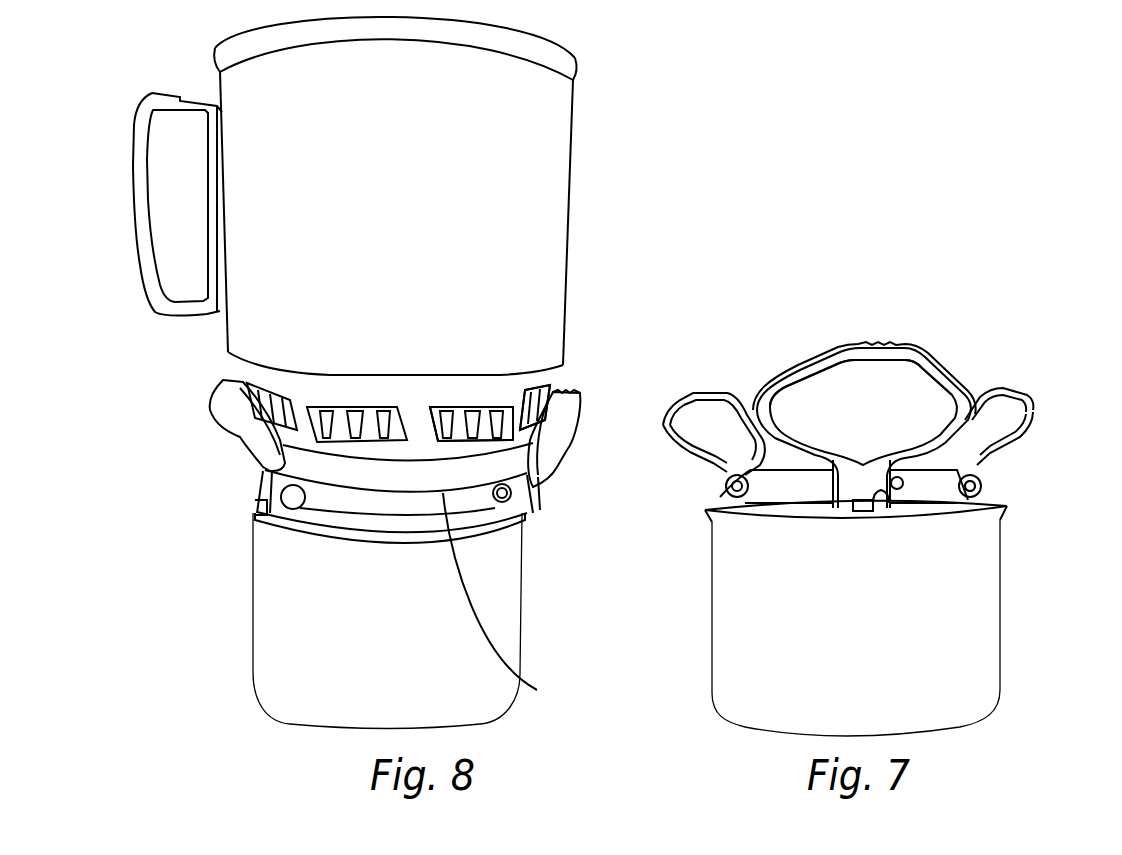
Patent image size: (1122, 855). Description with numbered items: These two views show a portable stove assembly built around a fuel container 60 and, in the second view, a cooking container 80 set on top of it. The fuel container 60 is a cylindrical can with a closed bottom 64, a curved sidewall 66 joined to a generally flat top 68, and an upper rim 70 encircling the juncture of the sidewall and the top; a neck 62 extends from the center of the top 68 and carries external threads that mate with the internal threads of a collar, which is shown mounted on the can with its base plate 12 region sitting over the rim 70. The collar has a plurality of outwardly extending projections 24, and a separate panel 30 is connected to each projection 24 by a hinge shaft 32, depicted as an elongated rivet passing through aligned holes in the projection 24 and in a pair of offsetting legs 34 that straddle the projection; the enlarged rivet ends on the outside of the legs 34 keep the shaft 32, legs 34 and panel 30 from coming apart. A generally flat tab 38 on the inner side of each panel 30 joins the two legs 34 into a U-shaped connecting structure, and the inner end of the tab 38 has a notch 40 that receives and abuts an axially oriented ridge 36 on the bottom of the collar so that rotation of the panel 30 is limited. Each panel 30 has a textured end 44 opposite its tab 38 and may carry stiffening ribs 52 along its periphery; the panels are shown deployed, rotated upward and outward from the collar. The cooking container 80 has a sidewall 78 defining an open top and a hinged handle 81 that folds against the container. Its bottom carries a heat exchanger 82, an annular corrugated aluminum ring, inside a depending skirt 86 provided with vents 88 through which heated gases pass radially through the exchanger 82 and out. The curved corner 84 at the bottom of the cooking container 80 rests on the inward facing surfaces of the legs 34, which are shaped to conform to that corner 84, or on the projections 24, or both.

In FIG. 8, the base plate 12 is at (362, 505).
In FIG. 7, the base plate 12 is at (783, 495).
In FIG. 8, the projections 24 is at (315, 500).
In FIG. 7, the projections 24 is at (757, 493).
In FIG. 8, the panel 30 is at (230, 428).
In FIG. 7, the panel 30 is at (937, 366).
In FIG. 7, the hinge shaft 32 is at (985, 489).
In FIG. 8, the offsetting legs 34 is at (290, 513).
In FIG. 7, the offsetting legs 34 is at (980, 481).
In FIG. 7, the ridge 36 is at (857, 510).
In FIG. 8, the tab 38 is at (257, 477).
In FIG. 7, the tab 38 is at (860, 483).
In FIG. 8, the notch 40 is at (258, 500).
In FIG. 7, the notch 40 is at (887, 505).
In FIG. 8, the textured end 44 is at (577, 388).
In FIG. 7, the textured end 44 is at (857, 346).
In FIG. 7, the stiffening ribs 52 is at (818, 368).
In FIG. 8, the fuel container 60 is at (577, 637).
In FIG. 7, the fuel container 60 is at (1043, 607).
In FIG. 7, the neck 62 is at (913, 510).
In FIG. 7, the bottom 64 is at (940, 733).
In FIG. 8, the sidewall 66 is at (507, 590).
In FIG. 7, the sidewall 66 is at (990, 552).
In FIG. 8, the top 68 is at (403, 528).
In FIG. 8, the upper rim 70 is at (472, 537).
In FIG. 7, the upper rim 70 is at (1000, 508).
In FIG. 8, the sidewall 78 is at (540, 237).
In FIG. 8, the cooking container 80 is at (590, 200).
In FIG. 8, the handle 81 is at (143, 273).
In FIG. 8, the heat exchanger 82 is at (493, 410).
In FIG. 8, the corner 84 is at (511, 603).
In FIG. 8, the skirt 86 is at (300, 420).
In FIG. 8, the vents 88 is at (350, 410).